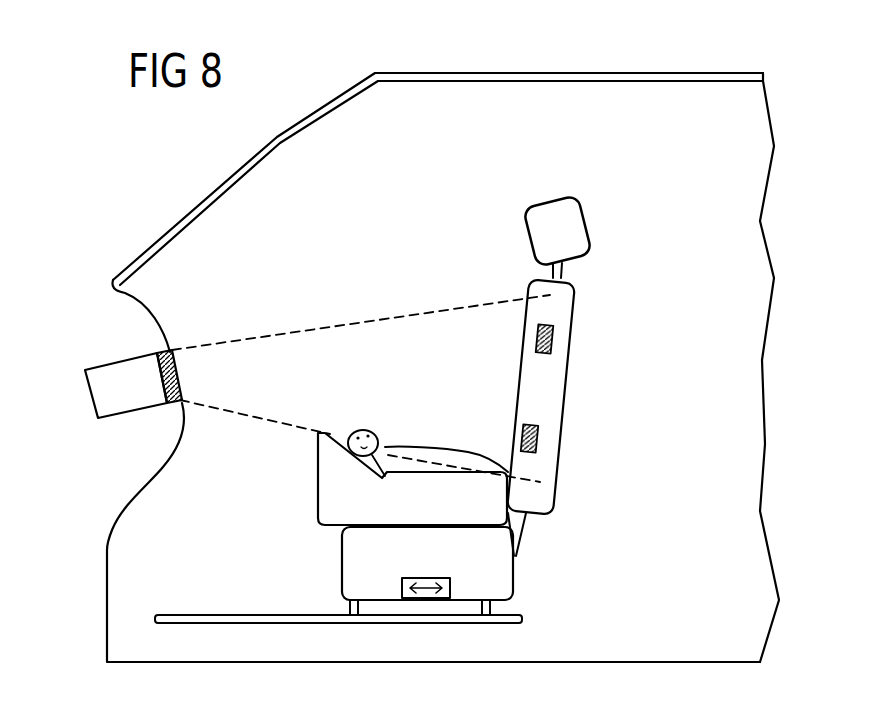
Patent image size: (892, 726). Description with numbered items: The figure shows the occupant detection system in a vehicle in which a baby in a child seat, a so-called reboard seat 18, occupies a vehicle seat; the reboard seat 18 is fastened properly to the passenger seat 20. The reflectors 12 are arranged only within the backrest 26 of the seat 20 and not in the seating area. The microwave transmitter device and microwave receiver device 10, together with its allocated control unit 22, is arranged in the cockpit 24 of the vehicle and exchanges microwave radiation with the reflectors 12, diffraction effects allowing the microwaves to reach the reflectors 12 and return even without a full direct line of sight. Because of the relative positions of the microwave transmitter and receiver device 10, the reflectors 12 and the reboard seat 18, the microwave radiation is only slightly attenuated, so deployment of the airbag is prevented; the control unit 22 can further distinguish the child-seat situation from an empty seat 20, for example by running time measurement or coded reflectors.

The microwave transmitter device and microwave receiver device 10 is at (177, 390).
The reflectors 12 is at (550, 343).
The reboard seat 18 is at (328, 482).
The passenger seat 20 is at (500, 585).
The control unit 22 is at (120, 377).
The cockpit 24 is at (122, 450).
The backrest 26 is at (572, 300).